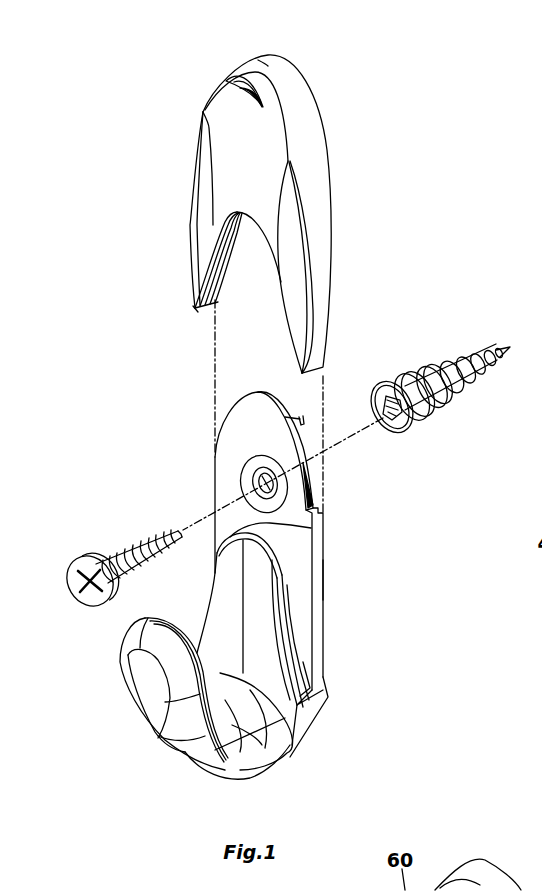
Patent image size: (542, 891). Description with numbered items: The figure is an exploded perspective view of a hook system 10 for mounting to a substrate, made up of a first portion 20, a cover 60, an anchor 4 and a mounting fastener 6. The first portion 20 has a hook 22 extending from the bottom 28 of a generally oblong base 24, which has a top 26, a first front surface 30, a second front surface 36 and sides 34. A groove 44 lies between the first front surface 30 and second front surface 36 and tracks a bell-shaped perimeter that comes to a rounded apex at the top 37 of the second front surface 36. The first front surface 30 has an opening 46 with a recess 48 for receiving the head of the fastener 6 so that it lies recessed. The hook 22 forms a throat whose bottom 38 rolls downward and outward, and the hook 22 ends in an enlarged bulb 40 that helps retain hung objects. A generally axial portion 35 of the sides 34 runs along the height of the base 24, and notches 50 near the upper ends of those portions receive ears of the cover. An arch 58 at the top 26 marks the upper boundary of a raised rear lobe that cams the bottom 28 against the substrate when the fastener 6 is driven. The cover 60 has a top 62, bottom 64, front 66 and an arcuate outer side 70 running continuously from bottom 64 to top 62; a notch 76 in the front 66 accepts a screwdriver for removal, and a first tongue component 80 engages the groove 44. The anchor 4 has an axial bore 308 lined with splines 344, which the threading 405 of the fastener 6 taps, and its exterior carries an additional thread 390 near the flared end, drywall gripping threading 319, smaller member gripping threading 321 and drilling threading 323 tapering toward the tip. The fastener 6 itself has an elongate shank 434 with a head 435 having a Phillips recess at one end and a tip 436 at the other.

The hook system 10 is at (135, 363).
The first portion 20 is at (199, 607).
The hook 22 is at (210, 748).
The base 24 is at (300, 590).
The top 26 is at (237, 390).
The bottom 28 is at (312, 738).
The first front surface 30 is at (237, 440).
The sides 34 is at (320, 506).
The generally axial portion 35 is at (327, 560).
The second front surface 36 is at (235, 597).
The top of second front surface 37 is at (312, 528).
The bottom of throat 38 is at (235, 738).
The bulb 40 is at (133, 682).
The groove 44 is at (295, 645).
The opening 46 is at (255, 480).
The recess 48 is at (250, 487).
The notches 50 is at (315, 470).
The arch 58 is at (303, 416).
The cover 60 is at (188, 117).
The top 62 is at (262, 64).
The bottom 64 is at (200, 312).
The front 66 is at (225, 148).
The outer side 70 is at (288, 82).
The notch 76 is at (243, 89).
The first tongue component 80 is at (222, 250).
The anchor 4 is at (445, 410).
The axial bore 308 is at (372, 392).
The splines 344 is at (395, 430).
The additional thread 390 is at (393, 378).
The drywall gripping threading 319 is at (425, 375).
The member gripping threading 321 is at (470, 360).
The drilling threading 323 is at (497, 350).
The mounting fastener 6 is at (105, 552).
The threading 405 is at (122, 585).
The shank 434 is at (132, 546).
The head 435 is at (72, 592).
The tip 436 is at (178, 535).